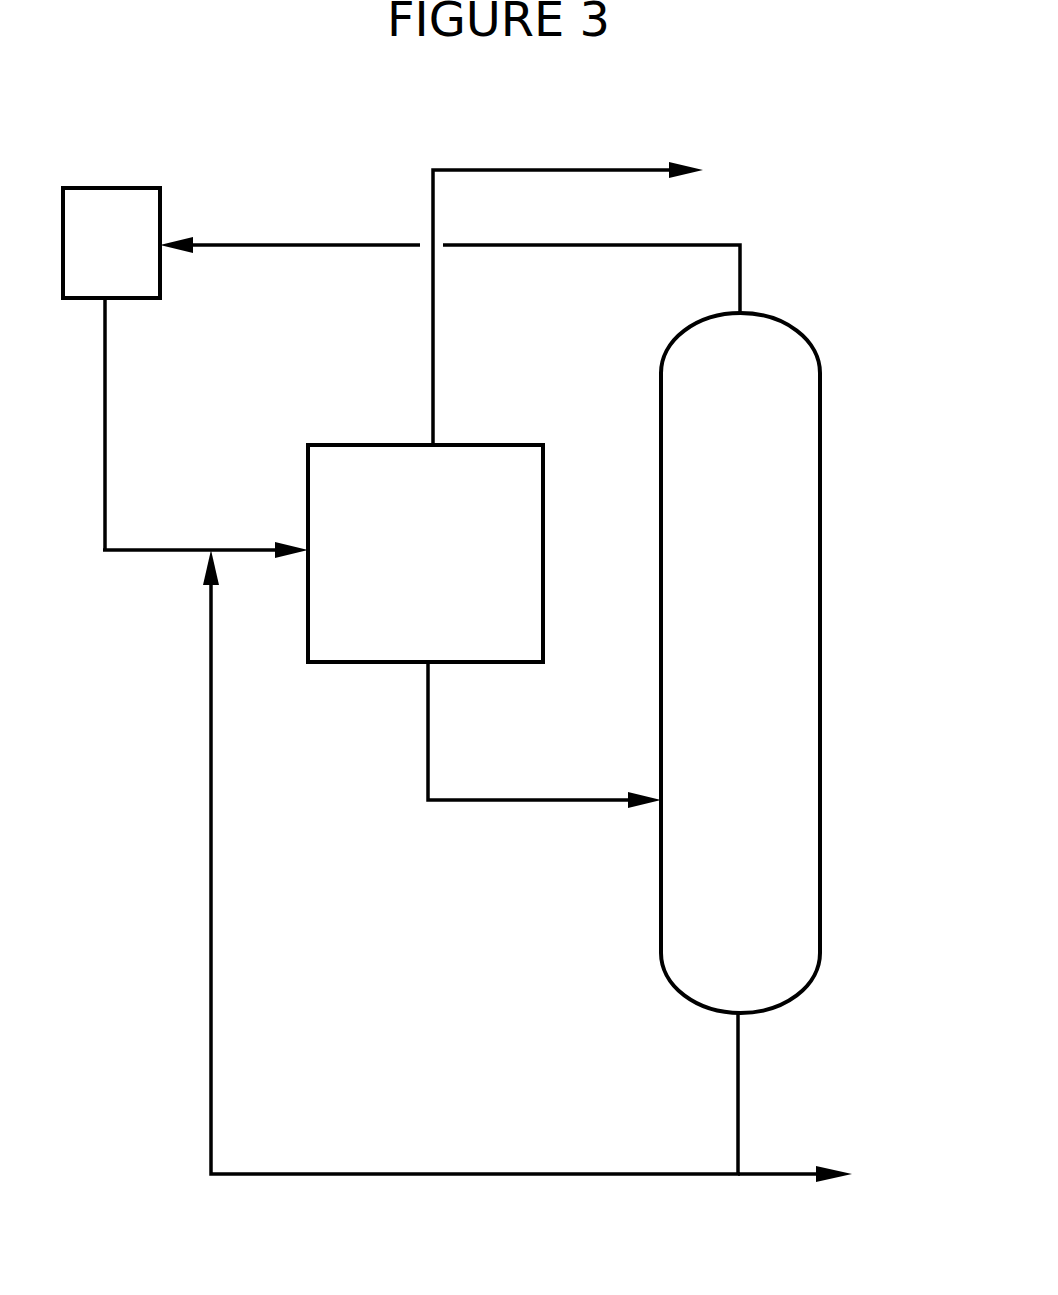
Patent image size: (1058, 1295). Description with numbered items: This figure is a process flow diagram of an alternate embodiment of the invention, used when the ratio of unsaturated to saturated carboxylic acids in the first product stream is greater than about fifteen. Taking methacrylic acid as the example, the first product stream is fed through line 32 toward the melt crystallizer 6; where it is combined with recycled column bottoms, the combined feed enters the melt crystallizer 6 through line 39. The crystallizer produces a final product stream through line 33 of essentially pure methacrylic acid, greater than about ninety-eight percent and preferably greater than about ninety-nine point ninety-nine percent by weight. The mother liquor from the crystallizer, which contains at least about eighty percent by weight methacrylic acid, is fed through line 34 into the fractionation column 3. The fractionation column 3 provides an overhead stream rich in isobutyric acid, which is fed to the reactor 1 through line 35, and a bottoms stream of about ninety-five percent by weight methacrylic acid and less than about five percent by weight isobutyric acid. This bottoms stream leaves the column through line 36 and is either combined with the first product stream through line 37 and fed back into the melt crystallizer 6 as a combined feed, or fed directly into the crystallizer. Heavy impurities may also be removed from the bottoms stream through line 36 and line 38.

The reactor 1 is at (111, 243).
The fractionation column 3 is at (740, 663).
The melt crystallizer 6 is at (425, 553).
The line 32 is at (76, 424).
The line 33 is at (568, 284).
The line 34 is at (544, 735).
The line 35 is at (450, 255).
The line 36 is at (709, 1094).
The line 37 is at (471, 862).
The line 38 is at (795, 1156).
The line 39 is at (205, 531).